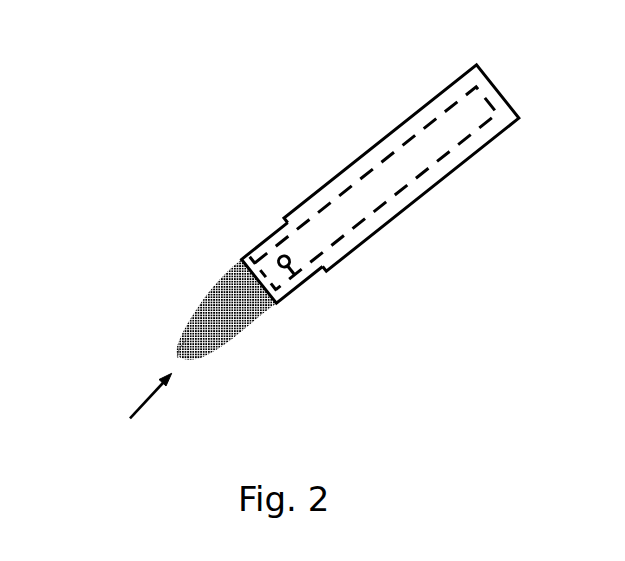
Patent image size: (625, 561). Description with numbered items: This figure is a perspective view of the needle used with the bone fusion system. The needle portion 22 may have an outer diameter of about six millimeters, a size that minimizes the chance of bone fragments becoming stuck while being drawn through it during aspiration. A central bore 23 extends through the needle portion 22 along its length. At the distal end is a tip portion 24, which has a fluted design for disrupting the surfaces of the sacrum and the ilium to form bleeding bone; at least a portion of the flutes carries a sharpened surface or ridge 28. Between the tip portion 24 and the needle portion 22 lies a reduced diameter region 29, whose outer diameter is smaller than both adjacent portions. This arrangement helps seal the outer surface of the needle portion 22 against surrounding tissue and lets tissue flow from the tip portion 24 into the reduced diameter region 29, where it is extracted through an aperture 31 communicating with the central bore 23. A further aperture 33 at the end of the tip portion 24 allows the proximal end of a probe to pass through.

The needle portion 22 is at (427, 188).
The central bore 23 is at (432, 137).
The tip portion 24 is at (129, 414).
The sharpened surface or ridge 28 is at (203, 307).
The reduced diameter region 29 is at (280, 243).
The aperture 31 is at (293, 281).
The aperture 33 is at (177, 348).